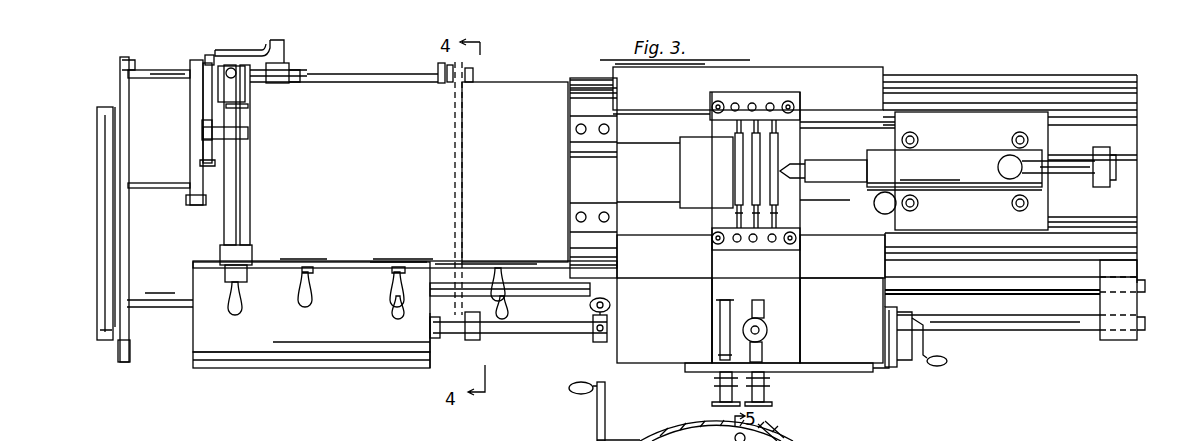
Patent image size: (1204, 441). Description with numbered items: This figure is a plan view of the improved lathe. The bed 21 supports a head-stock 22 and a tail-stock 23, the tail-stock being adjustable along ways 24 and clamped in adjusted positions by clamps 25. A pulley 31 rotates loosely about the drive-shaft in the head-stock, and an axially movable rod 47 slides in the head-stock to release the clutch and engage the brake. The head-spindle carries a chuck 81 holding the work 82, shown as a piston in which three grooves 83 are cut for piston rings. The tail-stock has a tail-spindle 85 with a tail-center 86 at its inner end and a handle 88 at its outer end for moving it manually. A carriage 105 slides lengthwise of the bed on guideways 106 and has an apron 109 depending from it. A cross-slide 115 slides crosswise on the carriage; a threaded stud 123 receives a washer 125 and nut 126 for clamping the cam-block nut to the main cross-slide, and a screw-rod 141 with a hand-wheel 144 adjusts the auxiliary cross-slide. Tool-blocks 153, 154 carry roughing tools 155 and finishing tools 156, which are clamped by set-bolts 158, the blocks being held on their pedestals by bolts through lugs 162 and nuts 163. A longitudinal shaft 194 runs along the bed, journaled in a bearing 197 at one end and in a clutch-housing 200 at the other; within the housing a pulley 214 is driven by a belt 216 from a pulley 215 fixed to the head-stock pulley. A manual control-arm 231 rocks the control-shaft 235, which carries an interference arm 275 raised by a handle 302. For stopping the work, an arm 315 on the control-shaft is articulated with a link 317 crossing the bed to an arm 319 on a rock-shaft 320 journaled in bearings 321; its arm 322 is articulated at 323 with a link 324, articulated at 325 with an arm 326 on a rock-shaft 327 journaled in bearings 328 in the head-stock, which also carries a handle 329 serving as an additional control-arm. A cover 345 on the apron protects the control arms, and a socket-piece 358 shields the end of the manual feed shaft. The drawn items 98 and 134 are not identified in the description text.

The bed 21 is at (1130, 105).
The head-stock 22 is at (556, 185).
The tail-stock 23 is at (960, 188).
The ways 24 is at (1098, 125).
The clamps 25 is at (1036, 203).
The pulley 31 is at (148, 60).
The axially movable rod 47 is at (248, 134).
The chuck 81 is at (653, 196).
The work 82 is at (694, 208).
The grooves 83 is at (773, 200).
The tail-spindle 85 is at (843, 167).
The tail-center 86 is at (796, 171).
The handle 88 is at (998, 166).
The ball 98 is at (882, 193).
The carriage 105 is at (832, 280).
The guideways 106 is at (1058, 81).
The apron 109 is at (876, 358).
The cross-slide 115 is at (709, 106).
The threaded stud 123 is at (766, 310).
The washer 125 is at (762, 346).
The nut 126 is at (767, 330).
The bolt 134 is at (770, 392).
The screw-rod 141 is at (710, 313).
The hand-wheel 144 is at (712, 391).
The tool-block 153 is at (772, 102).
The tool-block 154 is at (756, 318).
The cutting tools 155 is at (735, 128).
The cutting tools 156 is at (738, 212).
The set-bolts 158 is at (752, 100).
The lugs 162 is at (798, 105).
The nuts 163 is at (798, 100).
The longitudinal shaft 194 is at (1018, 292).
The bearing 197 is at (1100, 296).
The clutch-housing 200 is at (334, 368).
The pulley 214 is at (128, 257).
The pulley 215 is at (98, 112).
The belt 216 is at (118, 210).
The manual control-arm 231 is at (914, 309).
The control-shaft 235 is at (951, 332).
The arm 275 is at (600, 340).
The handle 302 is at (935, 362).
The arm 315 is at (480, 340).
The link 317 is at (483, 262).
The arm 319 is at (440, 66).
The rock-shaft 320 is at (392, 76).
The bearings 321 is at (478, 68).
The arm 322 is at (284, 60).
The articulation 323 is at (285, 48).
The link 324 is at (238, 60).
The articulation 325 is at (209, 55).
The arm 326 is at (212, 76).
The rock-shaft 327 is at (244, 108).
The bearings 328 is at (244, 96).
The handle 329 is at (230, 312).
The cover 345 is at (845, 373).
The socket-piece 358 is at (614, 300).